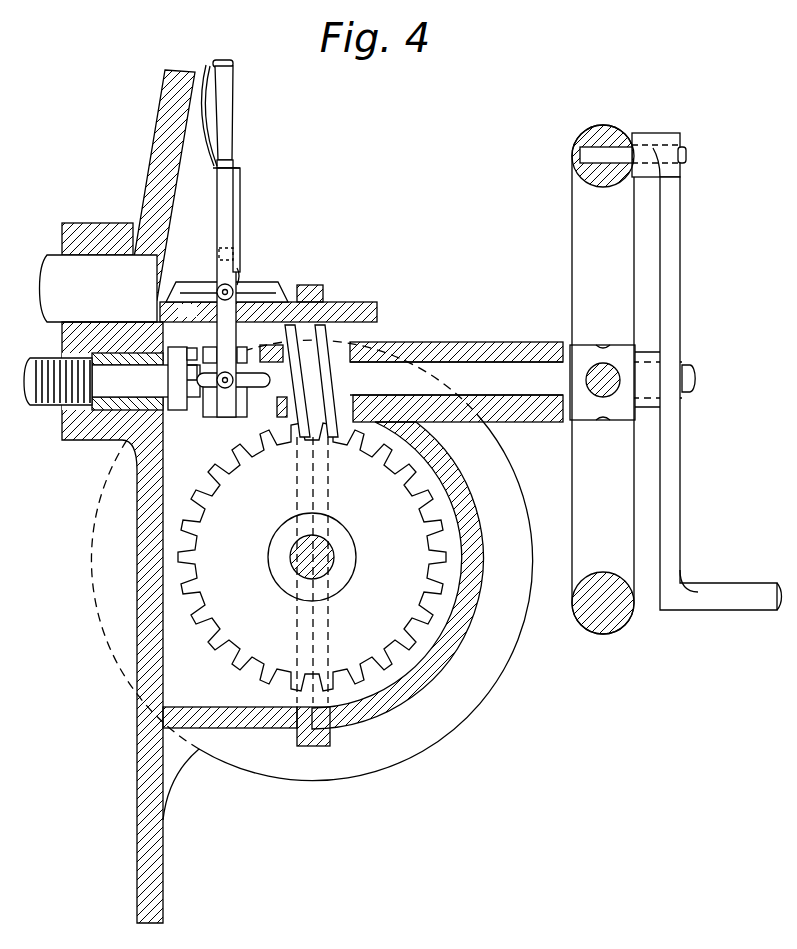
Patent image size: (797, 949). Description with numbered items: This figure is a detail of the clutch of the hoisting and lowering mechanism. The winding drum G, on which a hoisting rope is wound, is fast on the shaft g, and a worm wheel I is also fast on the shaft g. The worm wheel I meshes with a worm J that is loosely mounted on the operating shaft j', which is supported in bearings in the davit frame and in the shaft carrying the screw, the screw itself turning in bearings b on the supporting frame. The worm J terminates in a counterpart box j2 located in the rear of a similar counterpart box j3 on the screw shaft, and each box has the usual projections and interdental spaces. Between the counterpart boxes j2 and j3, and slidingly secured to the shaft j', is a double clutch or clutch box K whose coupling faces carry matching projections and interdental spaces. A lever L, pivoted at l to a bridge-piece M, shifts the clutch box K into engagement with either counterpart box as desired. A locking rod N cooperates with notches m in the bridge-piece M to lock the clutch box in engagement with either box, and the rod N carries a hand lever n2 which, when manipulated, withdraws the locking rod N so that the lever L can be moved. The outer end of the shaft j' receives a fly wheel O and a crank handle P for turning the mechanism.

The lever L is at (222, 147).
The hand lever n2 is at (208, 157).
The locking rod N is at (240, 207).
The notches m is at (254, 280).
The bridge-piece M is at (238, 283).
The pivot l is at (218, 290).
The counterpart box j2 is at (272, 340).
The worm J is at (347, 330).
The shaft j' is at (522, 362).
The fly wheel O is at (607, 124).
The crank handle P is at (680, 205).
The bearings b is at (110, 403).
The clutch box K is at (250, 418).
The counterpart box j3 is at (182, 410).
The shaft g is at (291, 547).
The worm wheel I is at (312, 557).
The winding drum G is at (524, 502).